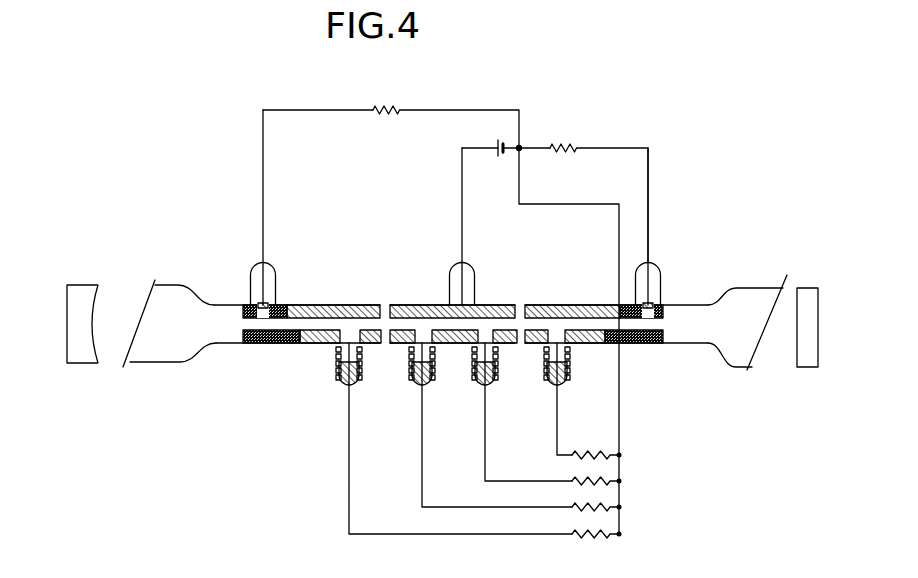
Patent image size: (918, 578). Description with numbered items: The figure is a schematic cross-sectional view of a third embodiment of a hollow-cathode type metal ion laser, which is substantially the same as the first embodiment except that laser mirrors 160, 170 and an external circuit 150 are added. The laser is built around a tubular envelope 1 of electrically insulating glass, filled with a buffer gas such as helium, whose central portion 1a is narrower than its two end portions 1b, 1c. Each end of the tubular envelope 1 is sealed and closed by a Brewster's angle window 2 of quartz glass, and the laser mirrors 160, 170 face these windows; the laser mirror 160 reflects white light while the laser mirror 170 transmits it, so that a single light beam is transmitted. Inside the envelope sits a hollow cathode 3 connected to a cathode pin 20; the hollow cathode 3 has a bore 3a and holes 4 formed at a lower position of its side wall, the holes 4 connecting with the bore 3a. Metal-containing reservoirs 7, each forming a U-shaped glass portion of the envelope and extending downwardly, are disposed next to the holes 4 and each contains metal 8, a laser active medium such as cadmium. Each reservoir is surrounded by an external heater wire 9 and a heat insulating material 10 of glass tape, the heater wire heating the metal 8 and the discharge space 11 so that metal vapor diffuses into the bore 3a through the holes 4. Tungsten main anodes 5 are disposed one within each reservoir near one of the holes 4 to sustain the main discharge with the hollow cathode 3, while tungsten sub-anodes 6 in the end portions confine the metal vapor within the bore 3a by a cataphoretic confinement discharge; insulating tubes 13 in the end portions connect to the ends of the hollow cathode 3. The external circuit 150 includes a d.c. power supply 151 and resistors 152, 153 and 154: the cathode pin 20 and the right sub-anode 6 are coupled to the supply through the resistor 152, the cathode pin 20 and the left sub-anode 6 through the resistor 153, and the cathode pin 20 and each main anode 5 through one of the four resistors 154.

The tubular envelope 1 is at (228, 300).
The central portion of the envelope 1a is at (326, 306).
The end portion of the tubular envelope 1b is at (182, 285).
The end portion of the tubular envelope 1c is at (740, 288).
The Brewster's angle window 2 is at (146, 285).
The hollow cathode 3 is at (571, 305).
The bore 3a is at (487, 330).
The holes 4 is at (570, 345).
The main anodes 5 is at (349, 396).
The sub-anodes 6 is at (261, 256).
The metal-containing reservoirs 7 is at (567, 375).
The metal 8 is at (563, 385).
The external heater wire 9 is at (478, 370).
The heat insulating material 10 is at (336, 357).
The discharge space 11 is at (424, 344).
The tubes 13 is at (283, 305).
The cathode pin 20 is at (461, 248).
The external circuit 150 is at (586, 108).
The d.c. power supply 151 is at (497, 139).
The resistor 152 is at (565, 152).
The resistor 153 is at (381, 102).
The resistors 154 is at (594, 450).
The laser mirror 160 is at (88, 363).
The laser mirror 170 is at (808, 367).